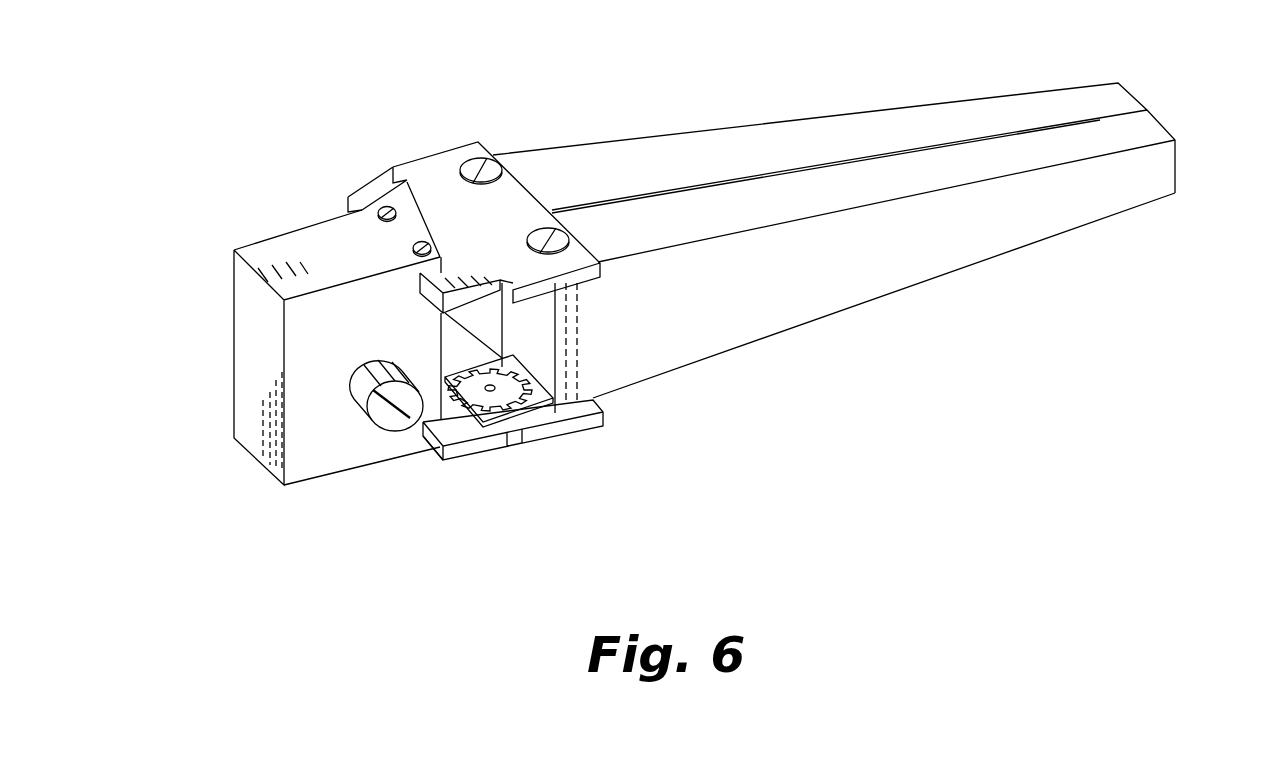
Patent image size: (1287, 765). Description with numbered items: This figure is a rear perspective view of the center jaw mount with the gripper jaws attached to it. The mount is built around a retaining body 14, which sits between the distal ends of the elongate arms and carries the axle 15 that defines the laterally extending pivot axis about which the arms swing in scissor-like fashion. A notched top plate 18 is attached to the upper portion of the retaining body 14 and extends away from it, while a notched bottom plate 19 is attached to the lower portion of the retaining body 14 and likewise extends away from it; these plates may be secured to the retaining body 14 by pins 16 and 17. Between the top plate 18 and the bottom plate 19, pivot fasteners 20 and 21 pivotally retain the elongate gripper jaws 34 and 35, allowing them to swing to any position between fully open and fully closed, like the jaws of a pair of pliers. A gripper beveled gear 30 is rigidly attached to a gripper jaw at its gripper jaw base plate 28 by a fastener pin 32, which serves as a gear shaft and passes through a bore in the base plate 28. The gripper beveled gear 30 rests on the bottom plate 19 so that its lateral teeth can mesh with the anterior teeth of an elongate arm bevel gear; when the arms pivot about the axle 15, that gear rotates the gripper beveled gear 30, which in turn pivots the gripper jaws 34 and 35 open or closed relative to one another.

The retaining body 14 is at (317, 247).
The axle 15 is at (395, 422).
The pin 16 is at (413, 252).
The pin 17 is at (386, 206).
The notched top plate 18 is at (443, 173).
The notched bottom plate 19 is at (550, 433).
The pivot fastener 20 is at (598, 259).
The pivot fastener 21 is at (480, 157).
The gripper jaw base plate 28 is at (466, 412).
The gripper beveled gear 30 is at (457, 458).
The fastener pin 32 is at (513, 410).
The gripper jaw 34 is at (917, 177).
The gripper jaw 35 is at (760, 153).